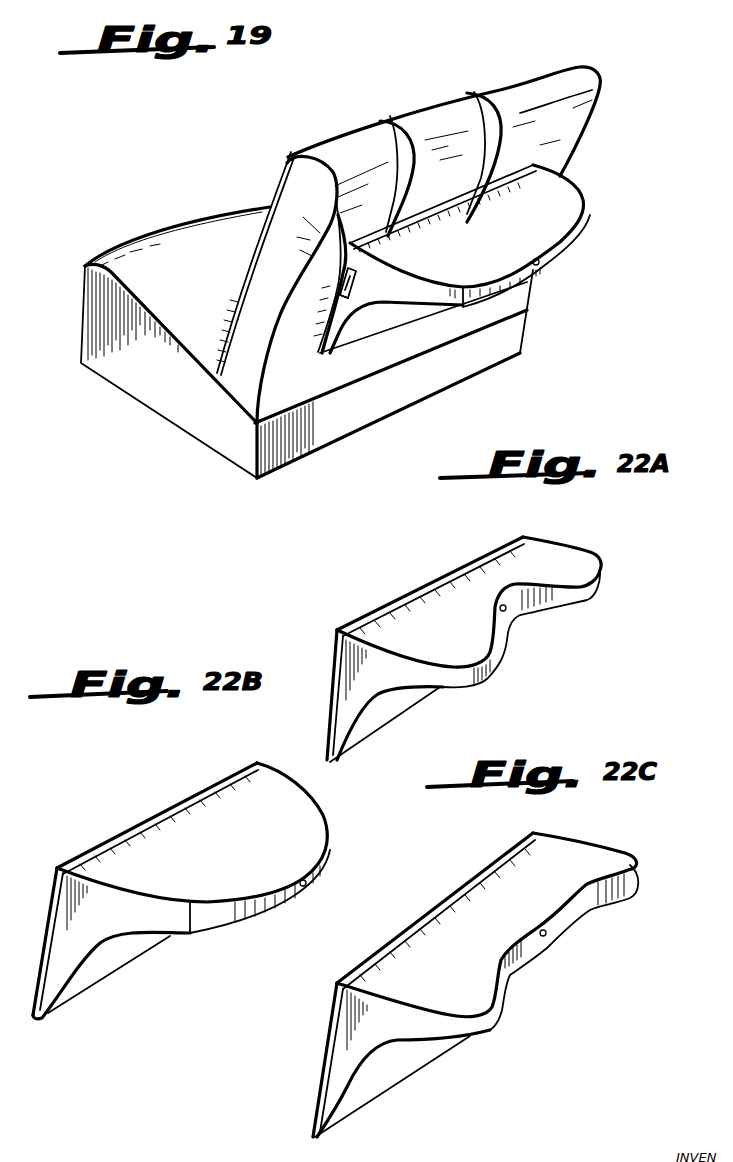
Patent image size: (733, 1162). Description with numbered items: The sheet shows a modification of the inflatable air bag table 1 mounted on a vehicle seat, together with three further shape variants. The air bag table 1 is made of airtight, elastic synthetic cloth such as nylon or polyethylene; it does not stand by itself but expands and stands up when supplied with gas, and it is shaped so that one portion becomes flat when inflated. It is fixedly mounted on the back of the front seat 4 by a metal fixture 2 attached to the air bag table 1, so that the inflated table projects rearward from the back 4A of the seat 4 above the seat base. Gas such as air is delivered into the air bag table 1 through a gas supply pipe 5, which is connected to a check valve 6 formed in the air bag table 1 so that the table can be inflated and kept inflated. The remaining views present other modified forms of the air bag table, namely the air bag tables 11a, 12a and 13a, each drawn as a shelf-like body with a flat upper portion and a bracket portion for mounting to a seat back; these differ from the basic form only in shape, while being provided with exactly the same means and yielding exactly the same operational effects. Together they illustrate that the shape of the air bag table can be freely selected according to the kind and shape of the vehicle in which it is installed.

In FIG. 19, the air bag table 1 is at (577, 278).
In FIG. 19, the fixture 2 is at (465, 95).
In FIG. 19, the front seat 4 is at (290, 184).
In FIG. 19, the back of the seat 4A is at (290, 347).
In FIG. 19, the gas supply pipe 5 is at (353, 290).
In FIG. 19, the check valve 6 is at (350, 300).
In FIG. 22A, the air bag table (modified form) 11a is at (575, 622).
In FIG. 22B, the air bag table (modified form) 12a is at (263, 940).
In FIG. 22C, the air bag table (modified form) 13a is at (568, 953).